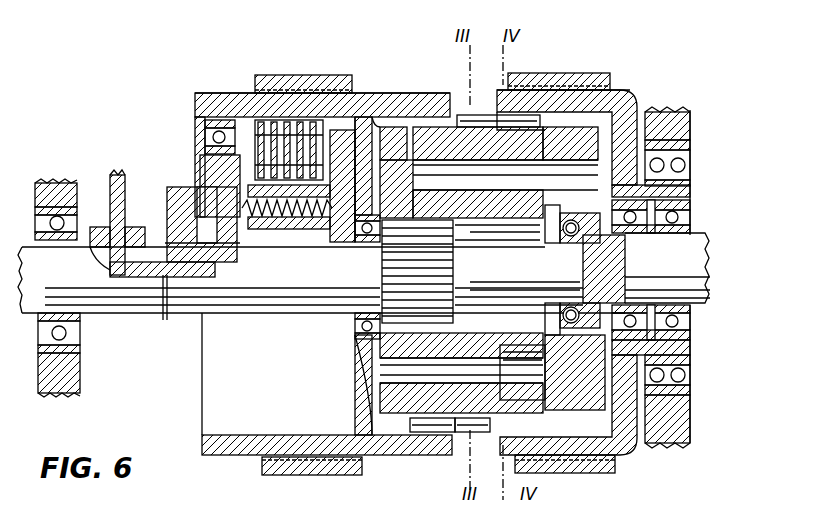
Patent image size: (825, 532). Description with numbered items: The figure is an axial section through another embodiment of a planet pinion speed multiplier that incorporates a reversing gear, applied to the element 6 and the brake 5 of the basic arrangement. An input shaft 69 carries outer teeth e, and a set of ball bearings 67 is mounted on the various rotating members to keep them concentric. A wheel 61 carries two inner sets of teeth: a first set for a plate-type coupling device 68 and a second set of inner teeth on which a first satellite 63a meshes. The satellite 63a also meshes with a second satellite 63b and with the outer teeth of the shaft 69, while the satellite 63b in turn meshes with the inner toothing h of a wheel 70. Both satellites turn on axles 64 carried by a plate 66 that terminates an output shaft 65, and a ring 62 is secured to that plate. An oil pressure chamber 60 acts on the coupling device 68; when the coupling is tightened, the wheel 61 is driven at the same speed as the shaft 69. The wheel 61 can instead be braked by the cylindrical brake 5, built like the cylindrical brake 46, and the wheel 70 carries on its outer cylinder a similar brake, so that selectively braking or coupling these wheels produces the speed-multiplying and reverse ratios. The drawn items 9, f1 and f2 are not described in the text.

The cylindrical brake 5 is at (323, 68).
The element 6 is at (576, 67).
The armature ring 9 is at (466, 115).
The cylindrical brake 46 is at (345, 88).
The oil pressure chamber 60 is at (200, 200).
The wheel 61 is at (234, 102).
The ring 62 is at (398, 128).
The satellite 63a is at (492, 336).
The satellite 63b is at (522, 222).
The axles of the satellites 64 is at (461, 279).
The shaft 65 is at (671, 268).
The plate 66 is at (600, 398).
The ball bearings 67 is at (212, 134).
The coupling device 68 is at (276, 245).
The shaft 69 is at (321, 283).
The wheel 70 is at (608, 450).
The outer teeth e is at (384, 247).
The groove f1 is at (476, 320).
The groove f2 is at (482, 233).
The inner toothing h is at (545, 425).